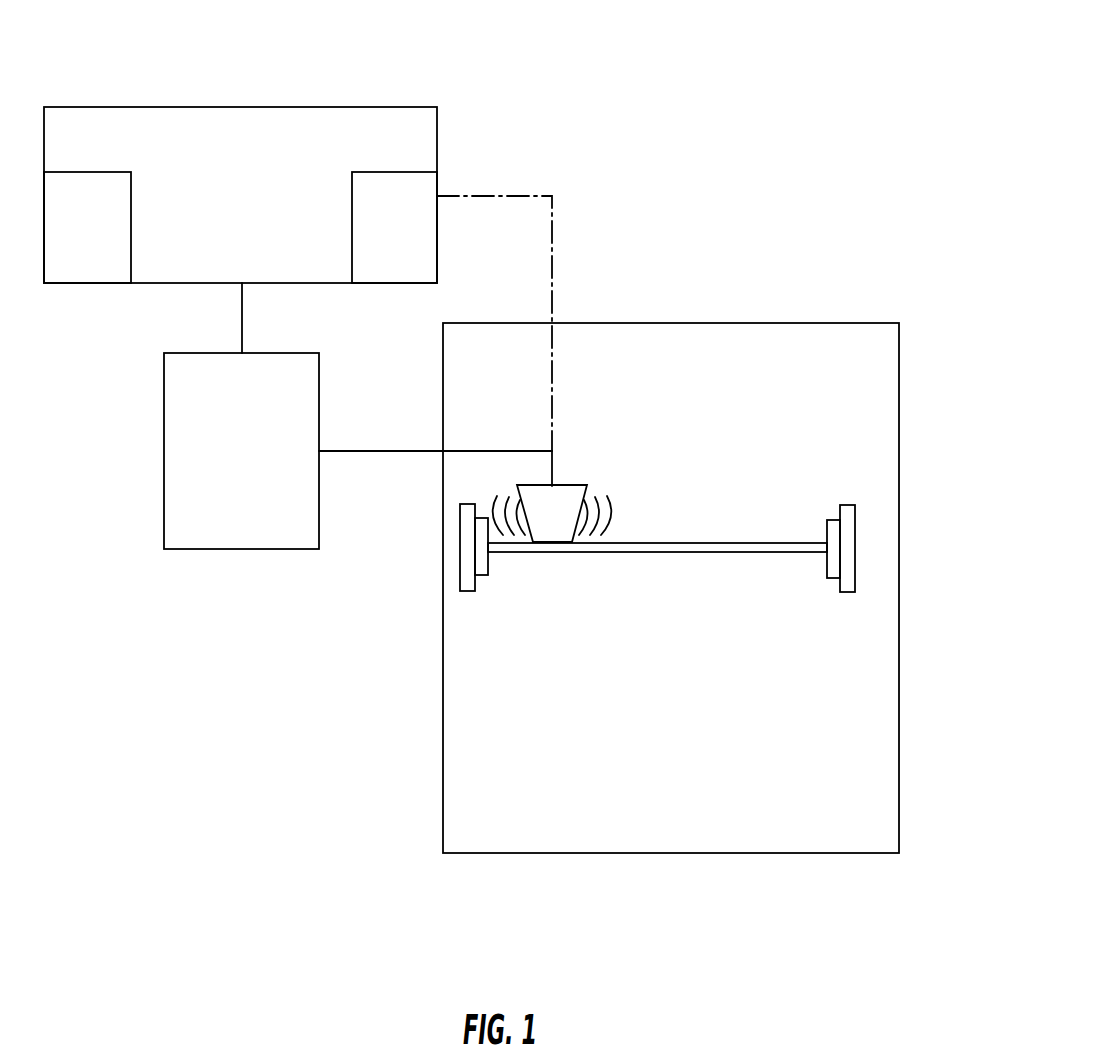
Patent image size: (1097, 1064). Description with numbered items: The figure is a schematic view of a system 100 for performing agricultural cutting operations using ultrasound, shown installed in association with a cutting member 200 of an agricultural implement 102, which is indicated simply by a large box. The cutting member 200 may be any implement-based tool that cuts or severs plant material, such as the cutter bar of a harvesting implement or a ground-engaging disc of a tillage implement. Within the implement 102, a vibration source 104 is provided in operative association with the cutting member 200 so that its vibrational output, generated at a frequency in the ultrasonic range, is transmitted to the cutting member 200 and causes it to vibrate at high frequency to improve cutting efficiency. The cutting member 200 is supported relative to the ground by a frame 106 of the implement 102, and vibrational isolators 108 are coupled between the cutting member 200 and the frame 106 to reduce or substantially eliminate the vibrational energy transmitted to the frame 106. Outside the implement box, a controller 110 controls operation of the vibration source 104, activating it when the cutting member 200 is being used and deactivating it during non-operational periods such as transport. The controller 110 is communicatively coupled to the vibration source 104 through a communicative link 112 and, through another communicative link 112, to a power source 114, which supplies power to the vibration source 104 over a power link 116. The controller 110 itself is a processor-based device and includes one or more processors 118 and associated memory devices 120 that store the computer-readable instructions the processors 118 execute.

The system 100 is at (917, 45).
The agricultural implement 102 is at (899, 807).
The vibration source 104 is at (567, 492).
The frame 106 is at (467, 503).
The vibrational isolator 108 is at (478, 572).
The controller 110 is at (271, 125).
The communicative link 112 is at (242, 322).
The power source 114 is at (212, 528).
The power link 116 is at (403, 451).
The processor 118 is at (69, 240).
The memory device 120 is at (374, 240).
The cutting member 200 is at (715, 555).